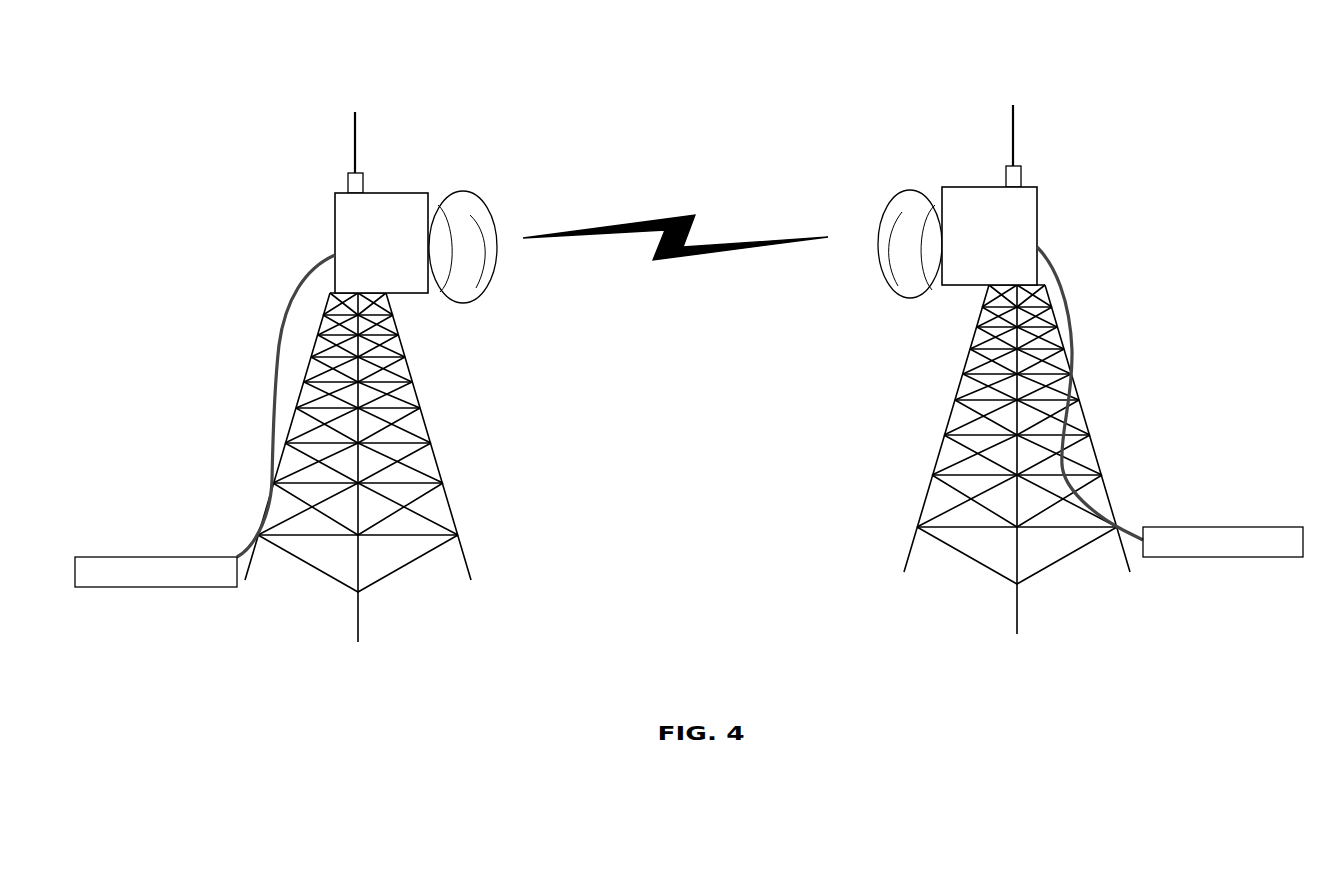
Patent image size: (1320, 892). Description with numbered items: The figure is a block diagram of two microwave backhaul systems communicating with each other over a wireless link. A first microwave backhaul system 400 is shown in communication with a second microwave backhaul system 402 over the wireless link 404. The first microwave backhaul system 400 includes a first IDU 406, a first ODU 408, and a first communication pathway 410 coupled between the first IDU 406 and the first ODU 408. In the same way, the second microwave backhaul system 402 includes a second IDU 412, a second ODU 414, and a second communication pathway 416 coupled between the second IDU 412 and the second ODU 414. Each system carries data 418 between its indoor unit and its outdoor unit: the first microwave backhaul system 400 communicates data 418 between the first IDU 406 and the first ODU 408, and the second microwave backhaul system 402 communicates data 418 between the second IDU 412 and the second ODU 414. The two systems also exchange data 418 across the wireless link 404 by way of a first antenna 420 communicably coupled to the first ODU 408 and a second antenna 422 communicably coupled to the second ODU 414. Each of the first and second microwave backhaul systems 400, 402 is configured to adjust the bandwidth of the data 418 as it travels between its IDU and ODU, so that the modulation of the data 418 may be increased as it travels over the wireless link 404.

The first microwave backhaul system 400 is at (689, 357).
The second microwave backhaul system 402 is at (260, 115).
The wireless link 404 is at (663, 178).
The first IDU 406 is at (1223, 542).
The first ODU 408 is at (989, 236).
The first communication pathway 410 is at (1067, 450).
The second IDU 412 is at (156, 572).
The second ODU 414 is at (381, 243).
The second communication pathway 416 is at (275, 425).
The data 418 is at (697, 216).
The first antenna 420 is at (903, 193).
The second antenna 422 is at (470, 204).